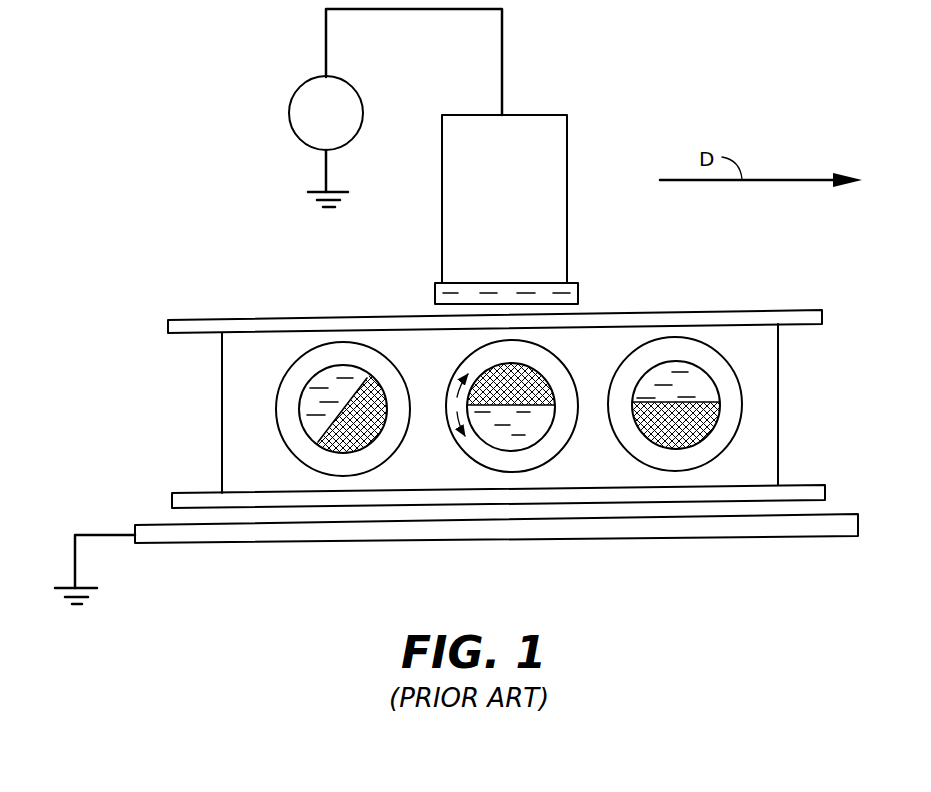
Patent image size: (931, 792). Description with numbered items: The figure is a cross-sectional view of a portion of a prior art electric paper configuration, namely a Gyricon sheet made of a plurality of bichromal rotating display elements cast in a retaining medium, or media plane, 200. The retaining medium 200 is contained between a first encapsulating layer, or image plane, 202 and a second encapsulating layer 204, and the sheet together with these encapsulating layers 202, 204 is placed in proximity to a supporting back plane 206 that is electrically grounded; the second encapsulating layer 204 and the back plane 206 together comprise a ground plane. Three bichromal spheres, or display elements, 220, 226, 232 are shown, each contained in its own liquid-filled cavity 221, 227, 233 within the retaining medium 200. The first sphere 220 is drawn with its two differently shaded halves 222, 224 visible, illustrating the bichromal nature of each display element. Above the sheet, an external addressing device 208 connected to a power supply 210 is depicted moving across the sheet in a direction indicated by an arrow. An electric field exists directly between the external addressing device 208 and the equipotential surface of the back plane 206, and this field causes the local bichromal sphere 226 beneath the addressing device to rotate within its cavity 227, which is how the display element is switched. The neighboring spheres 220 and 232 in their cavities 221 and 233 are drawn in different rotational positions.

The retaining medium 200 is at (221, 428).
The first encapsulating layer 202 is at (168, 326).
The second encapsulating layer 204 is at (172, 500).
The supporting back plane 206 is at (183, 538).
The external addressing device 208 is at (568, 128).
The power supply 210 is at (300, 107).
The bichromal sphere 220 is at (321, 438).
The liquid-filled cavity 221 is at (318, 358).
The liquid carrier portion 222 is at (320, 423).
The toner particle portion 224 is at (335, 452).
The bichromal sphere 226 is at (548, 378).
The liquid-filled cavity 227 is at (565, 412).
The bichromal sphere 232 is at (691, 358).
The liquid-filled cavity 233 is at (727, 383).